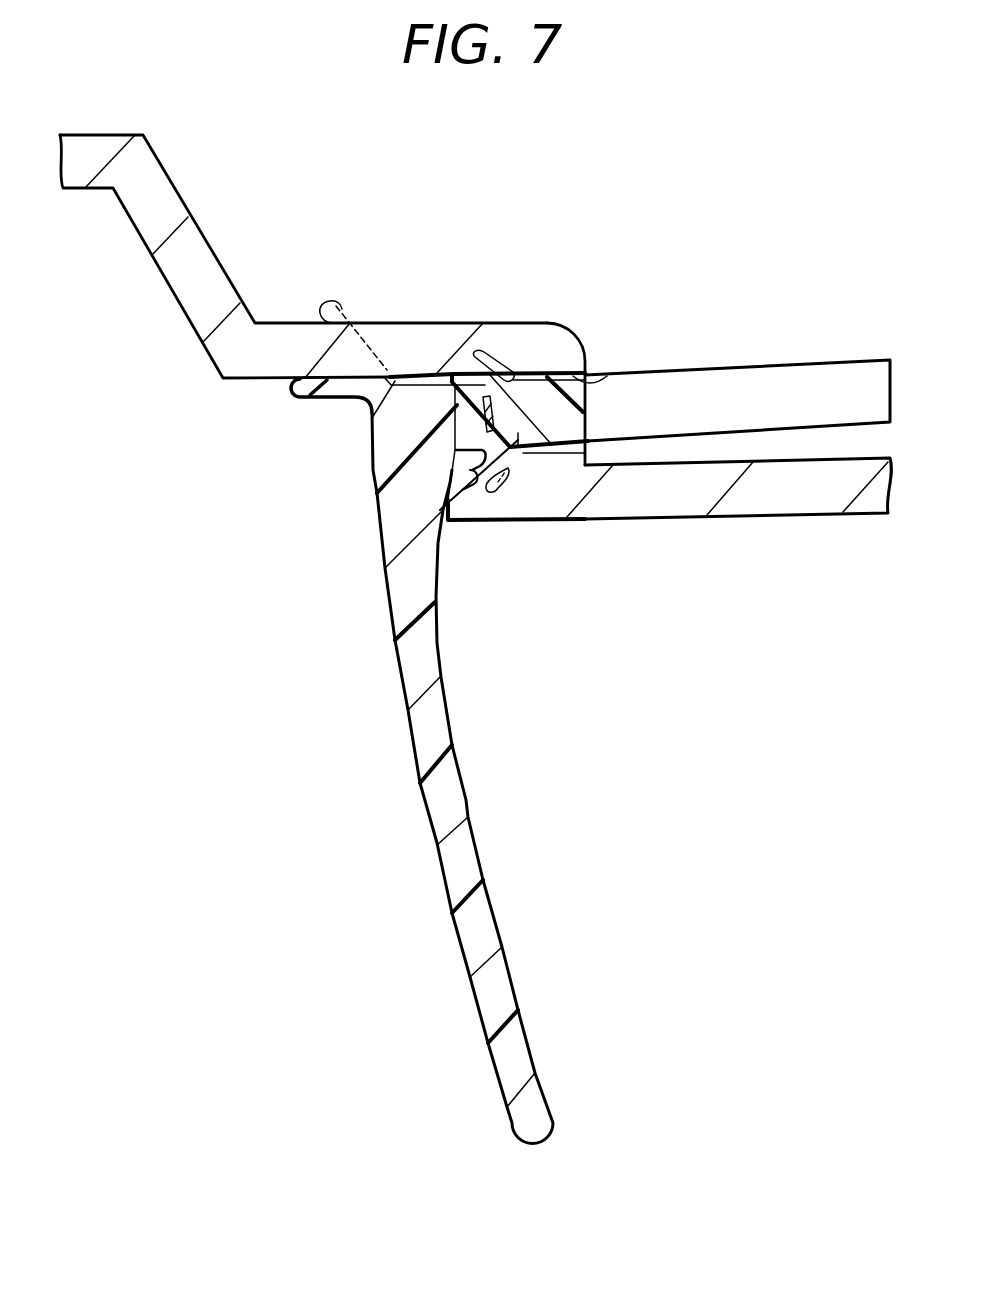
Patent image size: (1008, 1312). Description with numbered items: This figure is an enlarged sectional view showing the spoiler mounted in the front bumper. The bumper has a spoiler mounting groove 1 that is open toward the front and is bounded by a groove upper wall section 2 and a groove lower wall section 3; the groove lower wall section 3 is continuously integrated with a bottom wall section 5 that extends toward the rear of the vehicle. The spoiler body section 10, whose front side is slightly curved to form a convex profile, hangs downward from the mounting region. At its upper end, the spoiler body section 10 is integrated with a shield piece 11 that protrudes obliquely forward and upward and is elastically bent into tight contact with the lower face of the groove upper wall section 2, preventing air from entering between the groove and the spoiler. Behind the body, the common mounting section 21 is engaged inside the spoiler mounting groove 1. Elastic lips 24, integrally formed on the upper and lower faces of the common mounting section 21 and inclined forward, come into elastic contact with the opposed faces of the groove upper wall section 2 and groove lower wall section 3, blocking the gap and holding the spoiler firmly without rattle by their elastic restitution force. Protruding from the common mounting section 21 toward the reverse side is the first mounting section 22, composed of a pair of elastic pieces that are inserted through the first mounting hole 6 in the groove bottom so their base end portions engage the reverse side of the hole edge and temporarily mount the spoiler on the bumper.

The spoiler mounting groove 1 is at (417, 373).
The groove upper wall section 2 is at (305, 330).
The groove lower wall section 3 is at (515, 510).
The bottom wall section 5 is at (673, 507).
The first mounting hole 6 is at (612, 373).
The spoiler body section 10 is at (452, 874).
The shield piece 11 is at (325, 398).
The common mounting section 21 is at (523, 445).
The first mounting section 22 is at (765, 377).
The elastic lips 24 is at (458, 365).